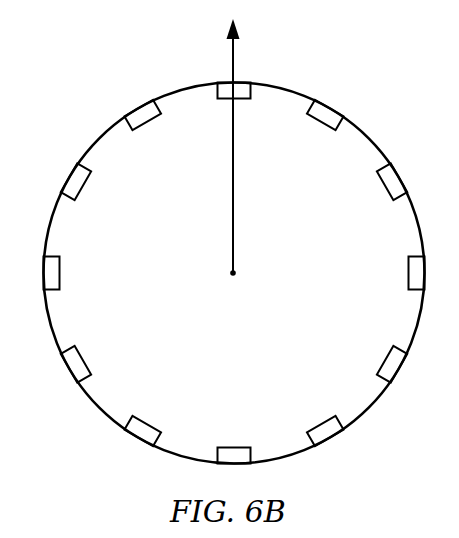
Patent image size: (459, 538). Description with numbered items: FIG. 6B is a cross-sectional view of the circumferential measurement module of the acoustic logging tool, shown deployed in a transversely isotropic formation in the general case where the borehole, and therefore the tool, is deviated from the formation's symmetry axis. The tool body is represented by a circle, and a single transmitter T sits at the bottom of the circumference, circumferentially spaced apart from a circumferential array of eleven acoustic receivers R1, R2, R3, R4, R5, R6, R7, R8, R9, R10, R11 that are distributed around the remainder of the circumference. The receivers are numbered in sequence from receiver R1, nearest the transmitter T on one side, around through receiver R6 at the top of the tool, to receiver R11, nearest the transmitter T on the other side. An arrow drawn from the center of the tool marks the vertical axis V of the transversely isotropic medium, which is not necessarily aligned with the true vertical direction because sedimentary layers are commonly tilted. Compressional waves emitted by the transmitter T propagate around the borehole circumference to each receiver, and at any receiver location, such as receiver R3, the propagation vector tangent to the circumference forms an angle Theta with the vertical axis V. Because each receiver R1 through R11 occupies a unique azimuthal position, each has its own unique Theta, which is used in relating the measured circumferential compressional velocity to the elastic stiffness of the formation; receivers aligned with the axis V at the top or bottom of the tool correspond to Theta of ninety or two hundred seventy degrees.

The vertical axis V is at (244, 145).
The transmitter T is at (234, 442).
The receiver R1 is at (318, 418).
The receiver R2 is at (379, 362).
The receiver R3 is at (401, 273).
The receiver R4 is at (381, 184).
The receiver R5 is at (320, 123).
The receiver R6 is at (228, 106).
The receiver R7 is at (146, 127).
The receiver R8 is at (85, 186).
The receiver R9 is at (66, 274).
The receiver R10 is at (89, 362).
The receiver R11 is at (145, 423).